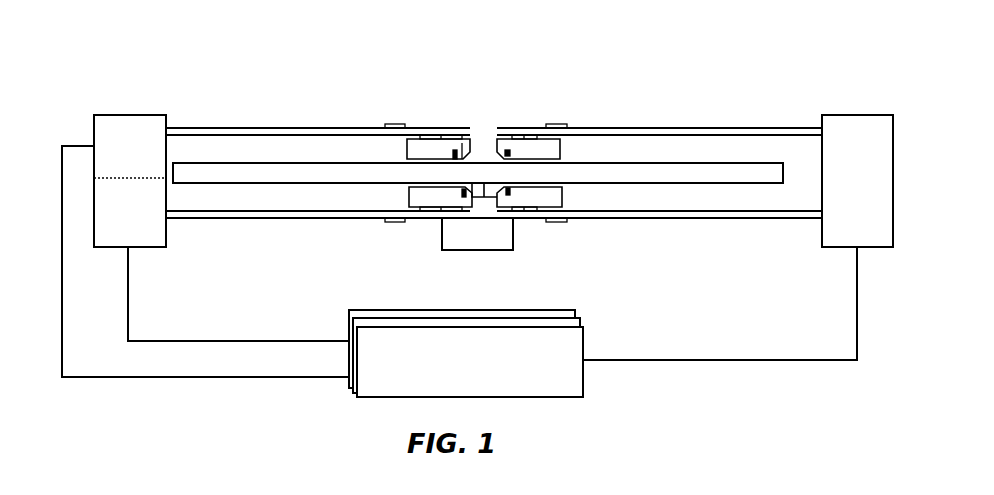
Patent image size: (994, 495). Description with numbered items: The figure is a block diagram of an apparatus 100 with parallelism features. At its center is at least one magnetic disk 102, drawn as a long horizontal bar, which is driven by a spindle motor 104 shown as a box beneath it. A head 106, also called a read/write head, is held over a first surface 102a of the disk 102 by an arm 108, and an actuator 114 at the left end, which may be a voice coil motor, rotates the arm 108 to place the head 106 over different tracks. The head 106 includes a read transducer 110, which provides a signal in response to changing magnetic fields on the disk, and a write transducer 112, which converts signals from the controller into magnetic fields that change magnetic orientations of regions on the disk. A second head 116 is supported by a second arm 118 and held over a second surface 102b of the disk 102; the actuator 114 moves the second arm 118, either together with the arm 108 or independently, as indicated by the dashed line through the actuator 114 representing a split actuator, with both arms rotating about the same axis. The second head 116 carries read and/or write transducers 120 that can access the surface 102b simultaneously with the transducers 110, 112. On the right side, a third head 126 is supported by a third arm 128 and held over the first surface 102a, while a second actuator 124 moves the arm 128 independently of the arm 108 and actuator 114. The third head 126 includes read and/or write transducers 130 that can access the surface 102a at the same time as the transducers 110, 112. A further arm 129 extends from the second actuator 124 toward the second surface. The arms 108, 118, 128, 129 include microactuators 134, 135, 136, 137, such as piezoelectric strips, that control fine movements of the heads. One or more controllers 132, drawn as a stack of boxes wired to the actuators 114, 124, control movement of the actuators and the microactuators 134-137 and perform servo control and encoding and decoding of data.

The apparatus 100 is at (616, 62).
The magnetic disk 102 is at (744, 176).
The first surface of the disk 102a is at (643, 163).
The second surface of the disk 102b is at (671, 183).
The spindle motor 104 is at (456, 250).
The head 106 is at (455, 96).
The arm 108 is at (297, 128).
The read transducer 110 is at (464, 143).
The write transducer 112 is at (455, 150).
The actuator 114 is at (121, 118).
The second head 116 is at (403, 229).
The second arm 118 is at (286, 218).
The read and/or write transducers 120 is at (450, 193).
The second actuator 124 is at (848, 115).
The third head 126 is at (526, 135).
The third arm 128 is at (670, 128).
The arm 129 is at (678, 218).
The read and/or write transducers 130 is at (508, 154).
The controllers 132 is at (545, 319).
The microactuator 134 is at (387, 124).
The microactuator 135 is at (390, 222).
The microactuator 136 is at (562, 124).
The microactuator 137 is at (554, 222).